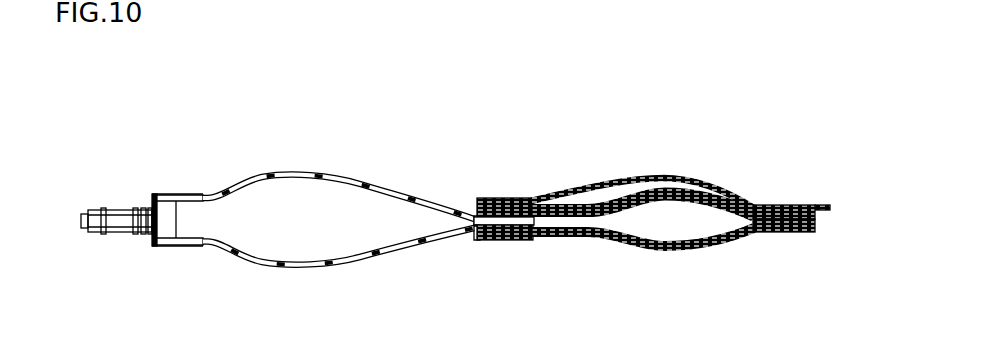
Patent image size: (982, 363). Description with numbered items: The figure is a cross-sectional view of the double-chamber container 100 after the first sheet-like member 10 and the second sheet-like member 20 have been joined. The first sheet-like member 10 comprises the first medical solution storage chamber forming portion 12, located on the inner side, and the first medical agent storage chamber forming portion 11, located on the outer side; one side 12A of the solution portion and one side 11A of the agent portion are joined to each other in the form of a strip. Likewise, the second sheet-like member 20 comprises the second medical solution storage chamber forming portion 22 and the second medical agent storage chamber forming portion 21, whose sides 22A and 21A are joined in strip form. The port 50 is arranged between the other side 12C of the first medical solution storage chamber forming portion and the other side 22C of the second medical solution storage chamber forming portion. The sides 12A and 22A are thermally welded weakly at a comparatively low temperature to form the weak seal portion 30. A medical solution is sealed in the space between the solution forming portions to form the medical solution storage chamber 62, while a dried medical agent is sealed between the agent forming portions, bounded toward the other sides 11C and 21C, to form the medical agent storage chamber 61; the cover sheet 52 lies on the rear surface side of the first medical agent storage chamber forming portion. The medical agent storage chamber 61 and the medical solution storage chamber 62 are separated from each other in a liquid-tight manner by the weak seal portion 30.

The double-chamber container 100 is at (163, 105).
The port 50 is at (121, 221).
The other side of first medical solution storage chamber forming portion 12C is at (176, 201).
The other side of second medical solution storage chamber forming portion 22C is at (177, 238).
The medical solution storage chamber 62 is at (268, 204).
The first sheet-like member 10 is at (308, 128).
The first medical solution storage chamber forming portion 12 is at (317, 172).
The one side of first medical solution storage chamber forming portion 12A is at (477, 213).
The one side of first medical agent storage chamber forming portion 11A is at (500, 206).
The weak seal portion 30 is at (522, 222).
The cover sheet 52 is at (672, 186).
The first medical agent storage chamber forming portion 11 is at (639, 180).
The other side of first medical agent storage chamber forming portion 11C is at (791, 213).
The second sheet-like member 20 is at (308, 315).
The second medical solution storage chamber forming portion 22 is at (315, 268).
The one side of second medical solution storage chamber forming portion 22A is at (490, 233).
The one side of second medical agent storage chamber forming portion 21A is at (511, 235).
The second medical agent storage chamber forming portion 21 is at (637, 251).
The other side of second medical agent storage chamber forming portion 21C is at (790, 232).
The medical agent storage chamber 61 is at (688, 225).